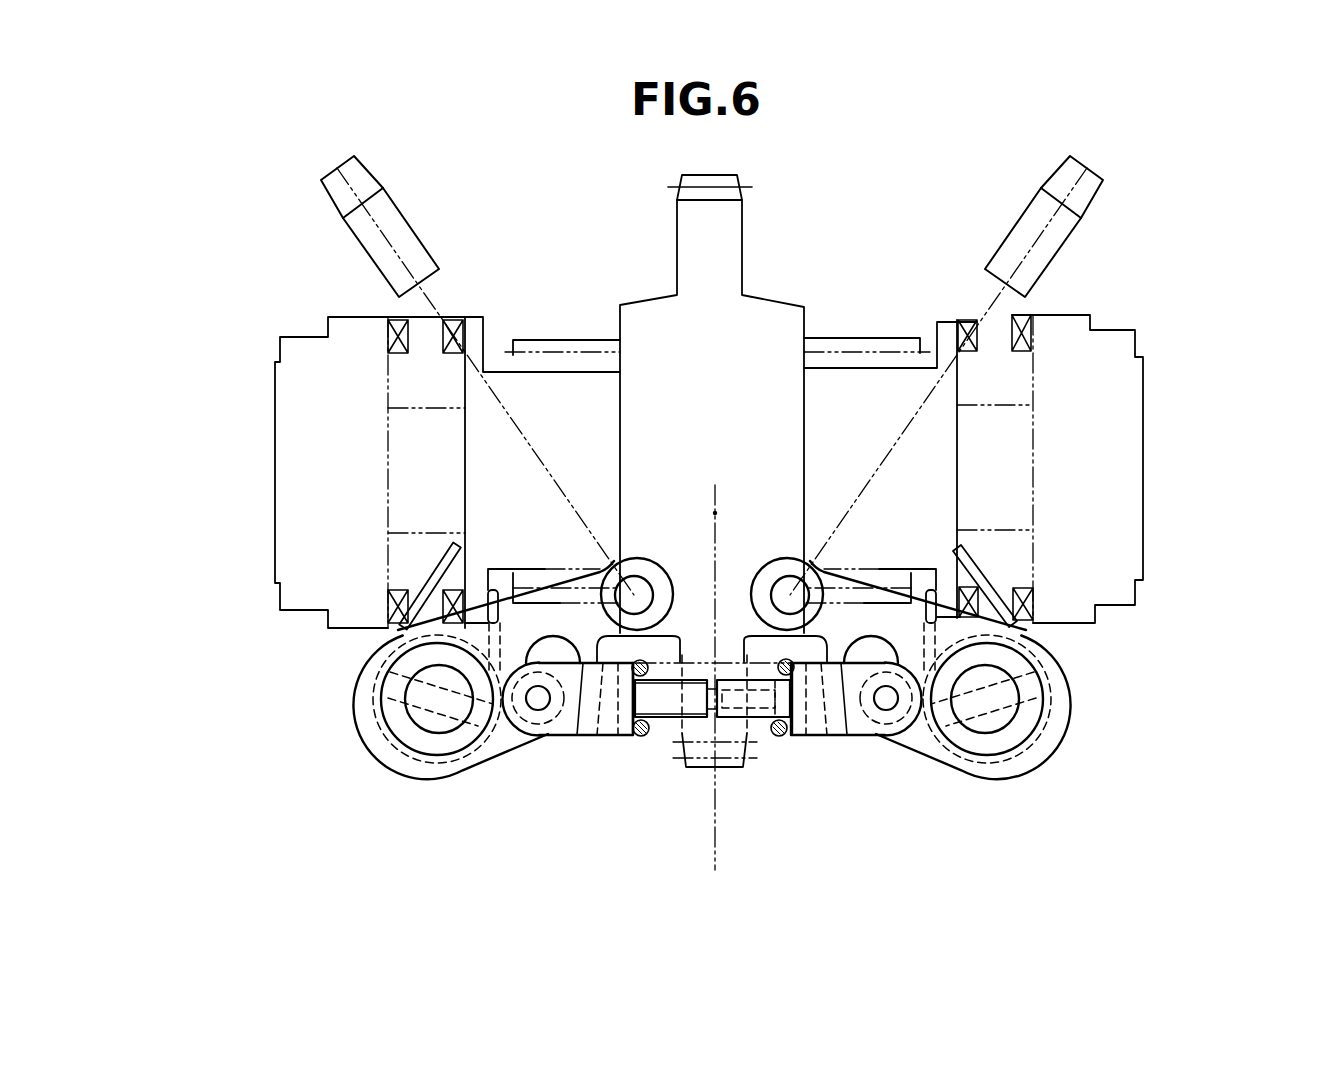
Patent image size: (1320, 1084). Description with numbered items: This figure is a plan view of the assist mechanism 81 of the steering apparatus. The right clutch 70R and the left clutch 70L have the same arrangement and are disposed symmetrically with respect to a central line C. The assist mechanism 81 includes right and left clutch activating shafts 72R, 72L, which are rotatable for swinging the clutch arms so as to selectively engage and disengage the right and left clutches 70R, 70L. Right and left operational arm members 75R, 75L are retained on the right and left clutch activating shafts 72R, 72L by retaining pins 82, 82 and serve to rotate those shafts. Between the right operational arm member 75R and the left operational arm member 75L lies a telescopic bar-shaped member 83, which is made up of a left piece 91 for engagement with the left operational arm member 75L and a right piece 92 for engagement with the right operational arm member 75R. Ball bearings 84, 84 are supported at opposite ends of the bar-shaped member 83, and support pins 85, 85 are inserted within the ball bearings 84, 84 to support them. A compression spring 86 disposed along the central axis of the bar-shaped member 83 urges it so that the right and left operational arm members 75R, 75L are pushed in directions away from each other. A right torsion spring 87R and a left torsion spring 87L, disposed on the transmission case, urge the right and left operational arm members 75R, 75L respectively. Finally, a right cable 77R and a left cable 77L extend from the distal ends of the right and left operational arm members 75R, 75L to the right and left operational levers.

The right clutch 70R is at (497, 278).
The left clutch 70L is at (868, 302).
The right cable 77R is at (322, 194).
The left cable 77L is at (1088, 200).
The right torsion spring 87R is at (428, 585).
The left torsion spring 87L is at (988, 580).
The right clutch activating shaft 72R is at (412, 733).
The left clutch activating shaft 72L is at (997, 720).
The right operational arm member 75R is at (358, 755).
The left operational arm member 75L is at (1070, 752).
The assist mechanism 81 is at (185, 805).
The retaining pin 82 is at (445, 735).
The telescopic bar-shaped member 83 is at (632, 752).
The ball bearing 84 is at (555, 735).
The support pin 85 is at (530, 727).
The compression spring 86 is at (775, 737).
The left piece 91 is at (655, 718).
The right piece 92 is at (828, 738).
The central line C is at (715, 513).